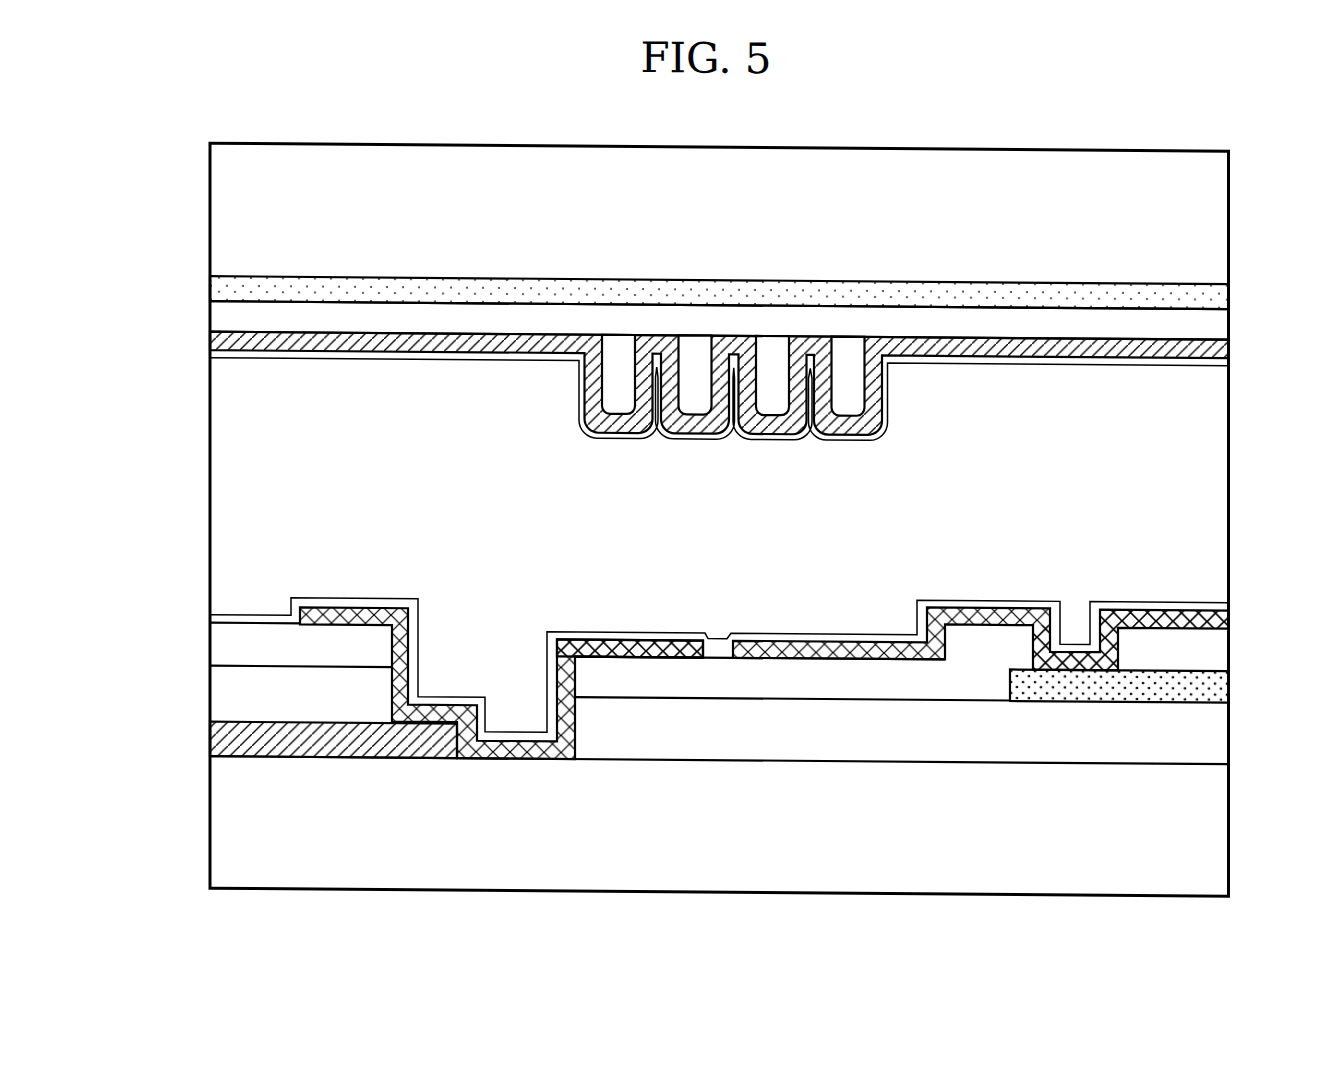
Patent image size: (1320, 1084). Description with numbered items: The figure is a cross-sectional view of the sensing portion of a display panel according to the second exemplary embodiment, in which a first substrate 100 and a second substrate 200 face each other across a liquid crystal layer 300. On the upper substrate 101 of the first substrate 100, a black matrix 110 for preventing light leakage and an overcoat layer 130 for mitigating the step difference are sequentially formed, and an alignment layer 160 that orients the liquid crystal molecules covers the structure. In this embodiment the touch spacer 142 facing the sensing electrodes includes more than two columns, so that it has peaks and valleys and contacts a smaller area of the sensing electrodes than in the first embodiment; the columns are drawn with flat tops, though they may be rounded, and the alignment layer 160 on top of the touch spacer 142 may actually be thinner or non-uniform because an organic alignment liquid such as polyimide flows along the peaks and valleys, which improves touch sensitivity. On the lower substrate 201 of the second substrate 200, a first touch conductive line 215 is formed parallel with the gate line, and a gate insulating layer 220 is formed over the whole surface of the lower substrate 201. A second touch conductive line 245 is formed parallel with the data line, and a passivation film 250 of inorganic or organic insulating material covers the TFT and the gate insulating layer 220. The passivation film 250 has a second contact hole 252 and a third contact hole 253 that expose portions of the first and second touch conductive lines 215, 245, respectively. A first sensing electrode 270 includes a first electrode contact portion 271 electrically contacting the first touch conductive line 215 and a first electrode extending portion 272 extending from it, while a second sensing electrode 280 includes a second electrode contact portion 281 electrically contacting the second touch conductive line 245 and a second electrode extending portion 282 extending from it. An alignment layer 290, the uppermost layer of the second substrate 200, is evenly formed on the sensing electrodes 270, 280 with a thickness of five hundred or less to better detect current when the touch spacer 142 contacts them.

The first substrate 100 is at (190, 142).
The upper substrate 101 is at (716, 174).
The black matrix 110 is at (316, 292).
The overcoat layer 130 is at (1040, 317).
The touch spacer 142 is at (855, 230).
The alignment layer 160 is at (1229, 352).
The liquid crystal layer 300 is at (228, 515).
The second substrate 200 is at (189, 887).
The lower substrate 201 is at (672, 845).
The first touch conductive line 215 is at (390, 754).
The gate insulating layer 220 is at (283, 693).
The second touch conductive line 245 is at (1108, 674).
The passivation film 250 is at (245, 635).
The second contact hole 252 is at (471, 648).
The third contact hole 253 is at (1077, 622).
The first sensing electrode 270 is at (662, 548).
The first electrode contact portion 271 is at (515, 733).
The first electrode extending portion 272 is at (650, 633).
The second sensing electrode 280 is at (932, 531).
The second electrode contact portion 281 is at (1062, 617).
The second electrode extending portion 282 is at (882, 640).
The alignment layer 290 is at (1229, 600).